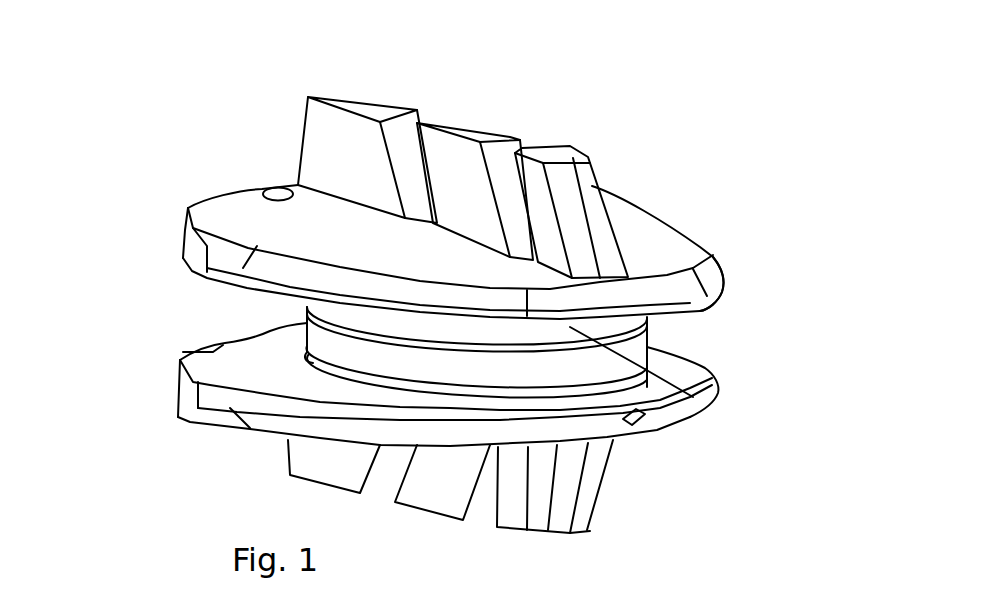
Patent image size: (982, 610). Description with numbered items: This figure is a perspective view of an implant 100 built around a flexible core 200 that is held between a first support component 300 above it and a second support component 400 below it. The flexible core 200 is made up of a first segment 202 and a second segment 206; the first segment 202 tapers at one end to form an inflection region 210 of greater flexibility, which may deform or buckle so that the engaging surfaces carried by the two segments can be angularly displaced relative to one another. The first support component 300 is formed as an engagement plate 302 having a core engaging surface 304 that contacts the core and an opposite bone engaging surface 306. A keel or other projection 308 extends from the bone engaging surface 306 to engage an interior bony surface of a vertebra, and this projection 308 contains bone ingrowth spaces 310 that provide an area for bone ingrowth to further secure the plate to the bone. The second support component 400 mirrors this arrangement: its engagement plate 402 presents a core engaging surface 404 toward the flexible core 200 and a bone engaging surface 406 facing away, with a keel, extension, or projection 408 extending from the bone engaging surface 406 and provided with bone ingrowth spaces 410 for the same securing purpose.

The implant 100 is at (778, 99).
The first support component 300 is at (264, 122).
The engagement plate 302 is at (242, 212).
The core engaging surface 304 is at (717, 308).
The bone engaging surface 306 is at (650, 237).
The projection 308 is at (587, 190).
The bone ingrowth spaces 310 is at (503, 163).
The flexible core 200 is at (193, 315).
The inflection region 210 is at (572, 328).
The first segment 202 is at (720, 389).
The second segment 206 is at (650, 385).
The second support component 400 is at (158, 458).
The engagement plate 402 is at (192, 395).
The core engaging surface 404 is at (225, 352).
The bone engaging surface 406 is at (662, 433).
The projection 408 is at (547, 510).
The bone ingrowth spaces 410 is at (491, 497).